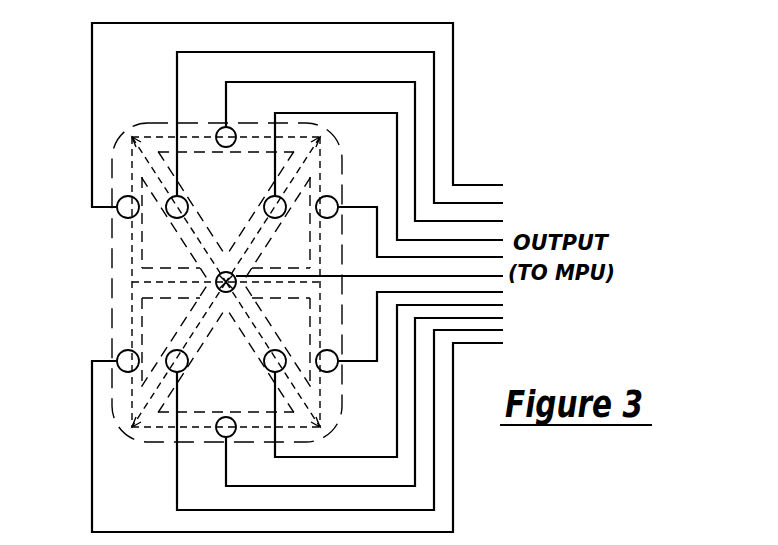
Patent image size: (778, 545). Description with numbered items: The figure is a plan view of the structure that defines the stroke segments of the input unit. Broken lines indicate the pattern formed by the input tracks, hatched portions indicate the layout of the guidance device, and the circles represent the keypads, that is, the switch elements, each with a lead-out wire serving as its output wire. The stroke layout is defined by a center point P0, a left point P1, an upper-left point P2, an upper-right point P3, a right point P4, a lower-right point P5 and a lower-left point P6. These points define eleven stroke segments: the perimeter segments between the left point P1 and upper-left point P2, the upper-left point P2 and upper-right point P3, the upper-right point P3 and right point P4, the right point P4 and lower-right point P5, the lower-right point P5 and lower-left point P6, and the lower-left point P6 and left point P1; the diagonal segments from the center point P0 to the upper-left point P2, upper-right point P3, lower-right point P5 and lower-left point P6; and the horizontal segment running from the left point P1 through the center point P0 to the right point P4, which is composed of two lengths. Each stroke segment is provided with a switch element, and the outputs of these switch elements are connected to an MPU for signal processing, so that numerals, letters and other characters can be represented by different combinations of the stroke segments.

The center point of stroke layout P0 is at (359, 271).
The left point of stroke layout P1 is at (202, 283).
The upper-left point of stroke layout P2 is at (122, 271).
The upper-right point of stroke layout P3 is at (331, 271).
The right point of stroke layout P4 is at (356, 286).
The lower-right point of stroke layout P5 is at (331, 434).
The lower-left point of stroke layout P6 is at (123, 434).